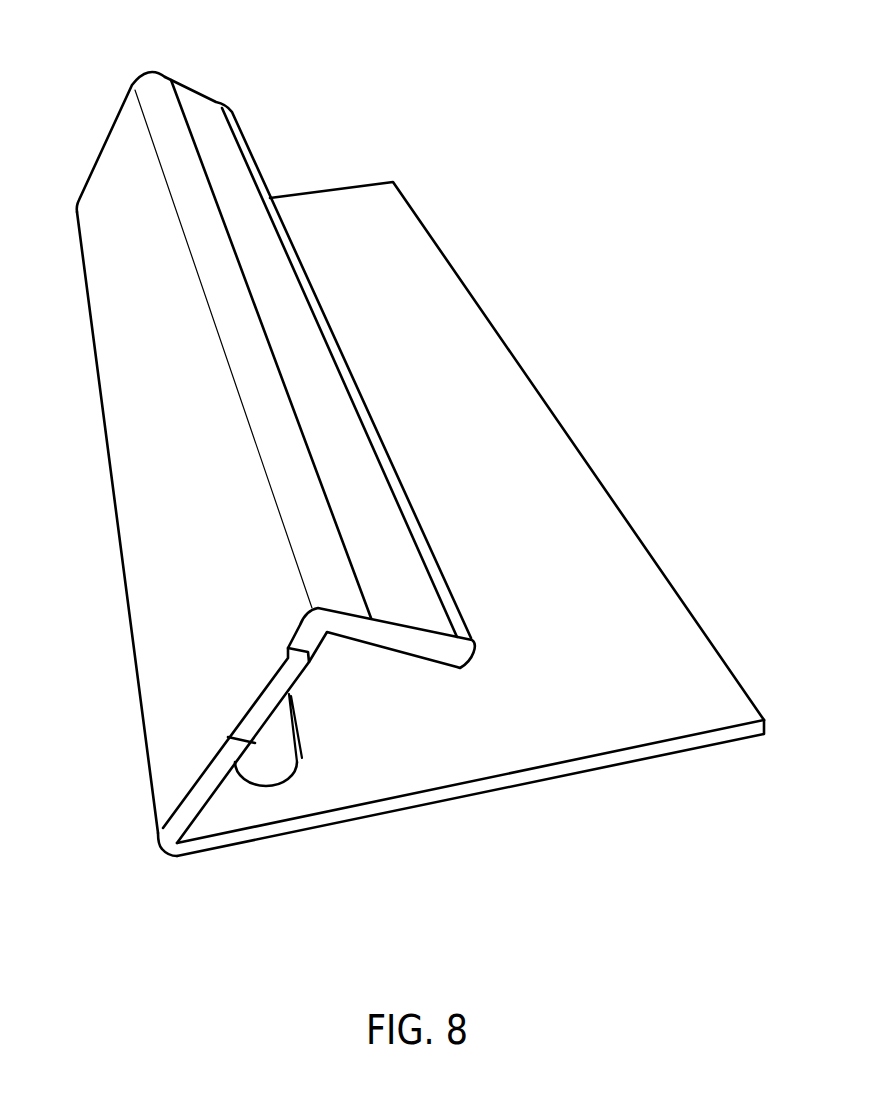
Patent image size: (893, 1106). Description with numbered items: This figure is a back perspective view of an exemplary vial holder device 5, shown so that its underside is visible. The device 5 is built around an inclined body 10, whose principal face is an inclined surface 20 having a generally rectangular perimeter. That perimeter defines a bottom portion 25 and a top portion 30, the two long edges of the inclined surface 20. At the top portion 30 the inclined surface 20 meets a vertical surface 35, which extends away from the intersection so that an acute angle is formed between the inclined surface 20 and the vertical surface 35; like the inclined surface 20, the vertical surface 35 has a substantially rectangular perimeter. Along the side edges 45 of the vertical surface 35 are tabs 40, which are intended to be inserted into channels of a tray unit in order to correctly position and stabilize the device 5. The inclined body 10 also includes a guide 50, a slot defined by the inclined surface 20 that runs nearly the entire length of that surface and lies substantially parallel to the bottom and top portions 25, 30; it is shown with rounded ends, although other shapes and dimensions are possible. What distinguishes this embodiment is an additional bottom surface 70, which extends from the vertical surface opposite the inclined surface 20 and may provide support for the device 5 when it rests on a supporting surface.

The device 5 is at (86, 98).
The inclined body 10 is at (574, 838).
The inclined surface 20 is at (476, 330).
The bottom portion 25 is at (675, 588).
The top portion 30 is at (180, 853).
The vertical surface 35 is at (140, 428).
The tab 40 is at (272, 705).
The side edge 45 is at (186, 810).
The guide 50 is at (300, 773).
The bottom surface 70 is at (207, 118).